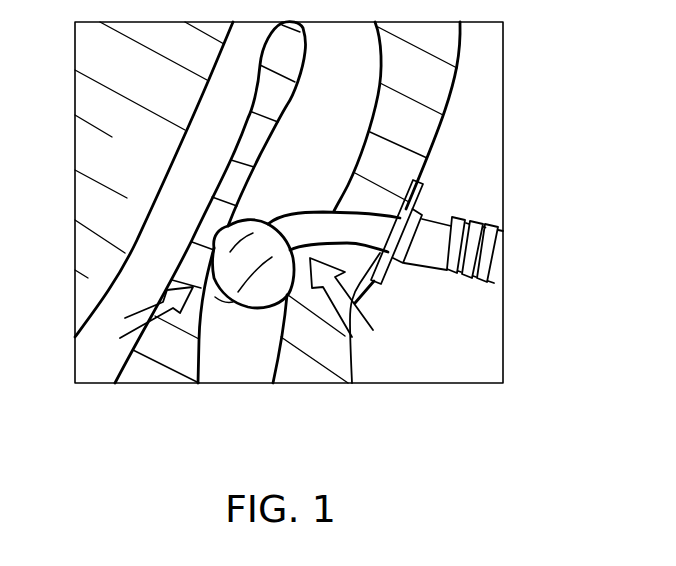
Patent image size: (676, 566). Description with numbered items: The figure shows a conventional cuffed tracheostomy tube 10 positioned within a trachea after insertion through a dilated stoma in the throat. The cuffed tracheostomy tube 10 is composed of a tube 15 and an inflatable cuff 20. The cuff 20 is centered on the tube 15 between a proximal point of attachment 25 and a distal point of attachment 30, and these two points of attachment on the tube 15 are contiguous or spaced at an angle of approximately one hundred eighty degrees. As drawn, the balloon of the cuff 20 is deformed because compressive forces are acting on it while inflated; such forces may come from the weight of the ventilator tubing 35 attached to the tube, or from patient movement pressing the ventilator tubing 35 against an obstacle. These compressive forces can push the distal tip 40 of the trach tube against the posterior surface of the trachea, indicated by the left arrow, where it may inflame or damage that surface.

The cuffed tracheostomy tube 10 is at (535, 224).
The tube 15 is at (353, 232).
The inflatable cuff 20 is at (228, 228).
The proximal point of attachment 25 is at (268, 218).
The distal point of attachment 30 is at (196, 262).
The ventilator tubing 35 is at (456, 220).
The distal tip 40 is at (208, 298).